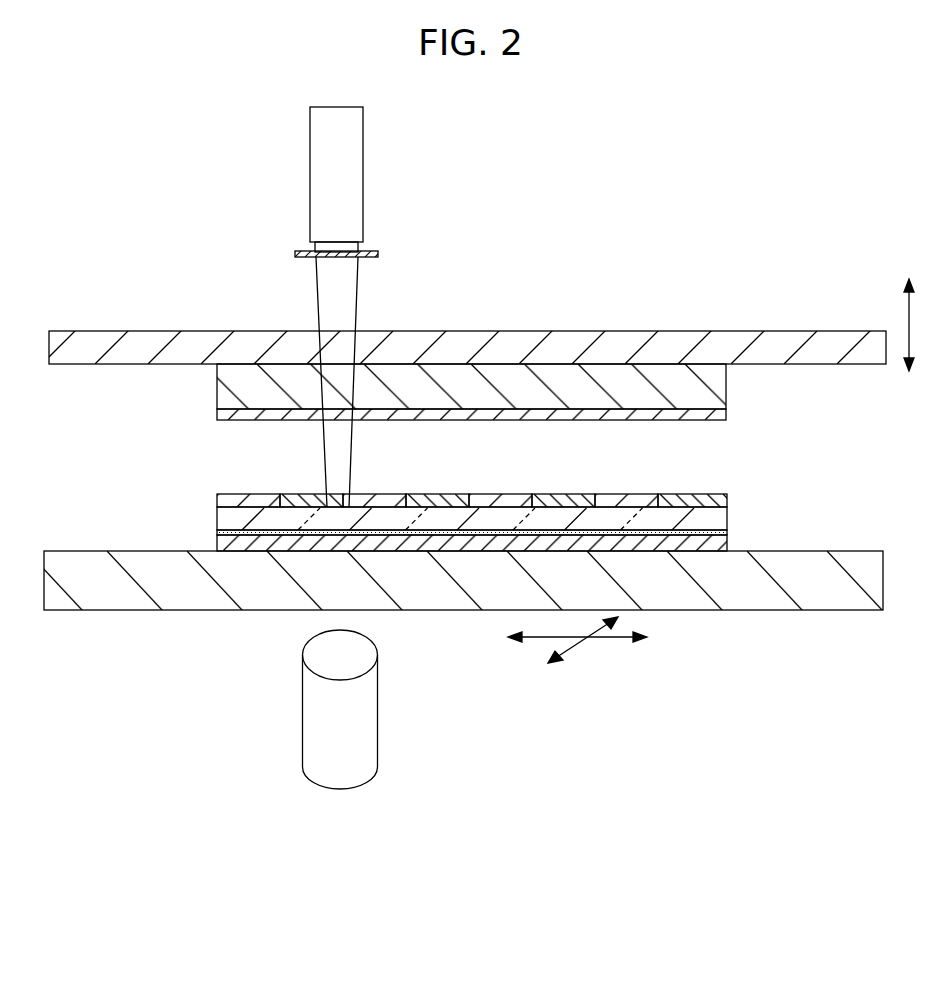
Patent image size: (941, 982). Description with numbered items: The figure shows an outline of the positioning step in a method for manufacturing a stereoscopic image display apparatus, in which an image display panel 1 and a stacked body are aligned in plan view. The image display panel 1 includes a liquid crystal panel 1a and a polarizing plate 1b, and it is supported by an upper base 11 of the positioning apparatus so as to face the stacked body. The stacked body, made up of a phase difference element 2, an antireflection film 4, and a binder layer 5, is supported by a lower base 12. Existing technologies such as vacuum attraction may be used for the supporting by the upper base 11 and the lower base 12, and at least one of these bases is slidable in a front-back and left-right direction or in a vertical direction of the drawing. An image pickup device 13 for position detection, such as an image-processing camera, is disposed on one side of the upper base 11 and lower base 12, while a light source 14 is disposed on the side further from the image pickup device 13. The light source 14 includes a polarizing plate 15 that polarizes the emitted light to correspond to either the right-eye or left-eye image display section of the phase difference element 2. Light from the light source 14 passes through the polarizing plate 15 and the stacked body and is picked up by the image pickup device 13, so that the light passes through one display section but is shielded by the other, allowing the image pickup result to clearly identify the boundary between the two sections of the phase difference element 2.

The image display panel 1 is at (523, 397).
The liquid crystal panel 1a is at (718, 386).
The polarizing plate 1b is at (718, 414).
The phase difference element 2 is at (733, 497).
The antireflection film 4 is at (718, 543).
The binder layer 5 is at (718, 531).
The upper base 11 is at (785, 341).
The lower base 12 is at (873, 576).
The image pickup device 13 is at (368, 709).
The light source 14 is at (355, 145).
The polarizing plate 15 is at (376, 258).